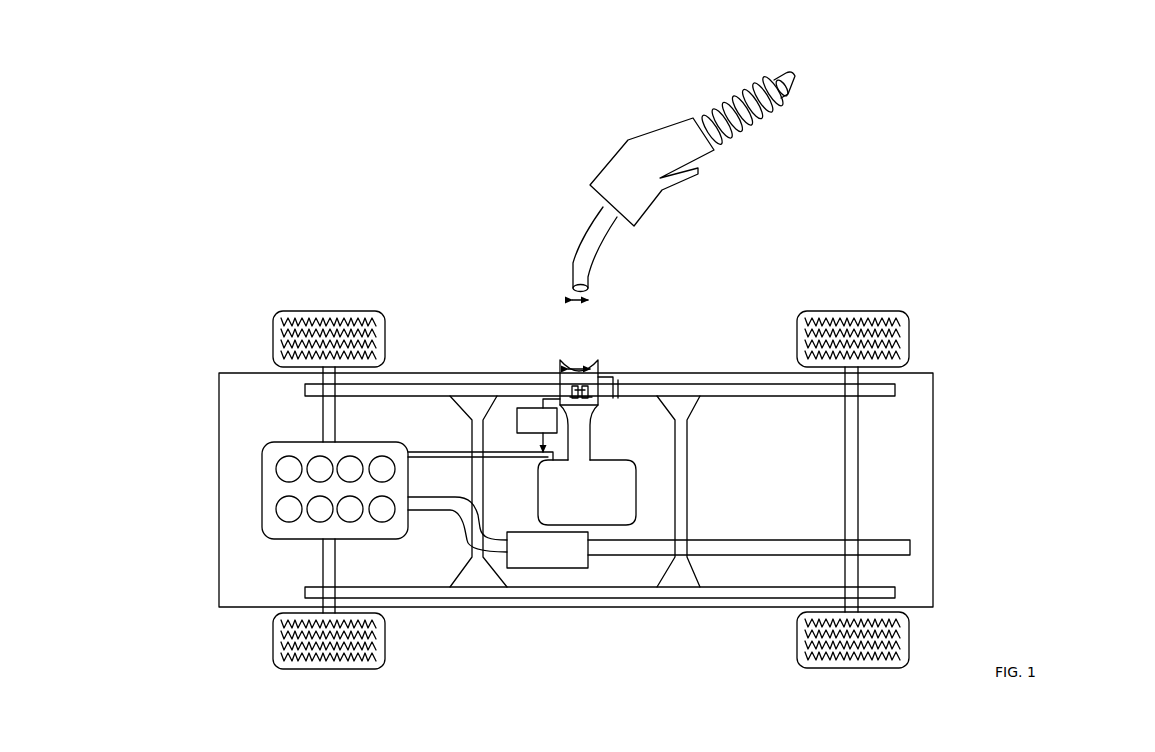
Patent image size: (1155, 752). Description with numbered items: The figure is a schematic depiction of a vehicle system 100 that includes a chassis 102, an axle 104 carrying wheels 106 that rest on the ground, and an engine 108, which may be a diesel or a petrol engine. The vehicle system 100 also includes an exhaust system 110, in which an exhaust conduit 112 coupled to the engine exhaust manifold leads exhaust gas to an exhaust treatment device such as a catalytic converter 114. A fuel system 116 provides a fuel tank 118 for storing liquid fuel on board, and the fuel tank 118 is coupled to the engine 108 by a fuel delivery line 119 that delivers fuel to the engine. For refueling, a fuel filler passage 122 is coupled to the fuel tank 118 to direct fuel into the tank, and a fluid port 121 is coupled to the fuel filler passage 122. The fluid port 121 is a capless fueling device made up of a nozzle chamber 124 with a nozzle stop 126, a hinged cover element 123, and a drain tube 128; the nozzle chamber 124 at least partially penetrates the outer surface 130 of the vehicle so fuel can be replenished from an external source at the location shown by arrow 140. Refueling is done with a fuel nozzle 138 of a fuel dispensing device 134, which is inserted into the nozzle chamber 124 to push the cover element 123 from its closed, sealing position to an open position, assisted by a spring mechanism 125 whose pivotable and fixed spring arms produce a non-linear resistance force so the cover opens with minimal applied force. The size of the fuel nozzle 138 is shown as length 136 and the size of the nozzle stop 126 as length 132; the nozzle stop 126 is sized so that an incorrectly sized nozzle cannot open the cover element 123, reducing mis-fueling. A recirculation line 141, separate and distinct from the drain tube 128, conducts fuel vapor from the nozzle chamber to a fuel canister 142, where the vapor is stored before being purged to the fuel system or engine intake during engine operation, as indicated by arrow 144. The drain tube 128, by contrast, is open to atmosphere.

The vehicle system 100 is at (182, 122).
The chassis 102 is at (449, 384).
The axle 104 is at (323, 426).
The wheels 106 is at (273, 340).
The engine 108 is at (262, 494).
The exhaust system 110 is at (507, 524).
The exhaust conduit 112 is at (441, 497).
The catalytic converter 114 is at (547, 550).
The fuel system 116 is at (637, 455).
The fuel tank 118 is at (587, 492).
The fuel delivery line 119 is at (457, 451).
The fluid port 121 is at (500, 320).
The fuel filler passage 122 is at (594, 450).
The cover element 123 is at (578, 388).
The nozzle chamber 124 is at (600, 370).
The spring mechanism 125 is at (592, 404).
The nozzle stop 126 is at (568, 357).
The drain tube 128 is at (613, 390).
The outer surface 130 is at (692, 373).
The length of nozzle stop 132 is at (578, 366).
The fuel dispensing device 134 is at (598, 170).
The length of fuel nozzle 136 is at (575, 300).
The fuel nozzle 138 is at (583, 232).
The arrow indicating refueling location 140 is at (817, 67).
The recirculation line 141 is at (543, 400).
The fuel canister 142 is at (537, 420).
The arrow indicating vapor purge 144 is at (542, 447).